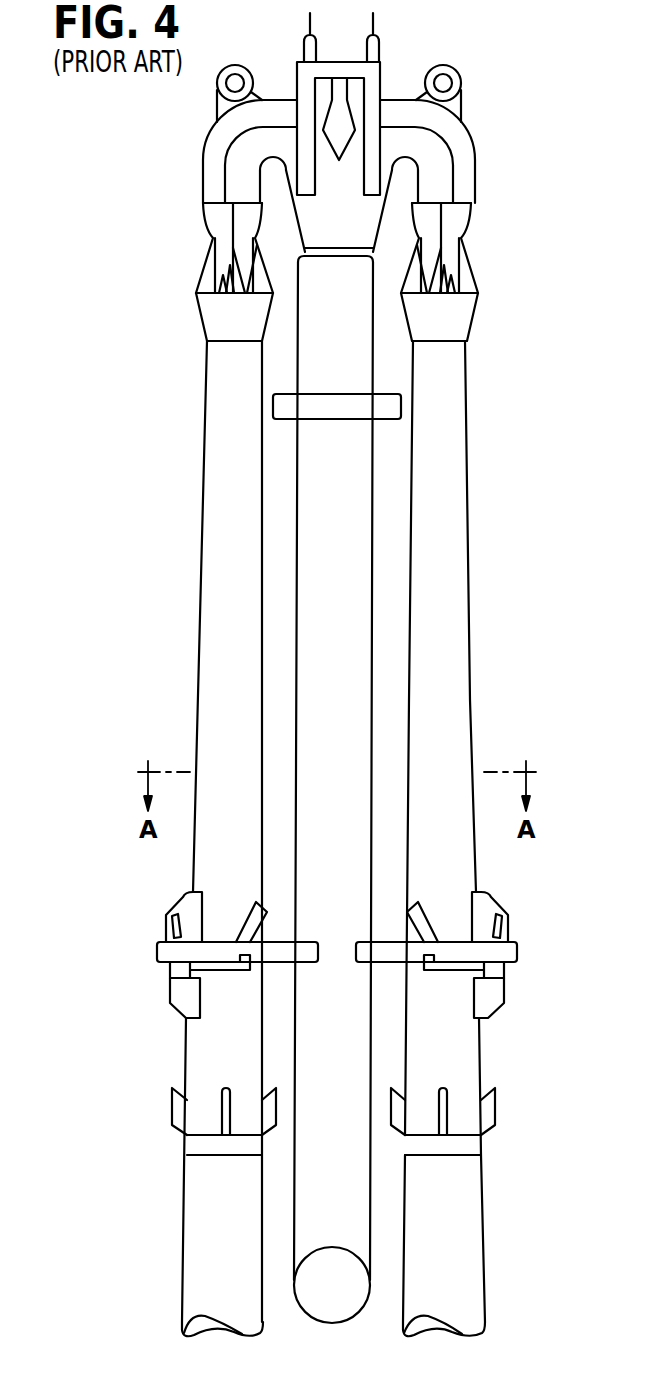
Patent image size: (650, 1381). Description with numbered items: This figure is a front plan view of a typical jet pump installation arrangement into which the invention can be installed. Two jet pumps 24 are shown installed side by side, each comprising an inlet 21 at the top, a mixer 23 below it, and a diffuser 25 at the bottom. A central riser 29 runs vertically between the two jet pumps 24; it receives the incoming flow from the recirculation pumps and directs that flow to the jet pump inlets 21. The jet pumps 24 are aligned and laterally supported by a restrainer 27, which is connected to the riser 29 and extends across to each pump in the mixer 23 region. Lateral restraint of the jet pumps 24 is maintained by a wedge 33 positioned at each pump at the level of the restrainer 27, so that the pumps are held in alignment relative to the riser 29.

The inlet 21 is at (460, 370).
The jet pump 24 is at (460, 507).
The riser 29 is at (363, 685).
The wedge 33 is at (181, 903).
The restrainer 27 is at (492, 953).
The mixer 23 is at (463, 1052).
The diffuser 25 is at (470, 1192).